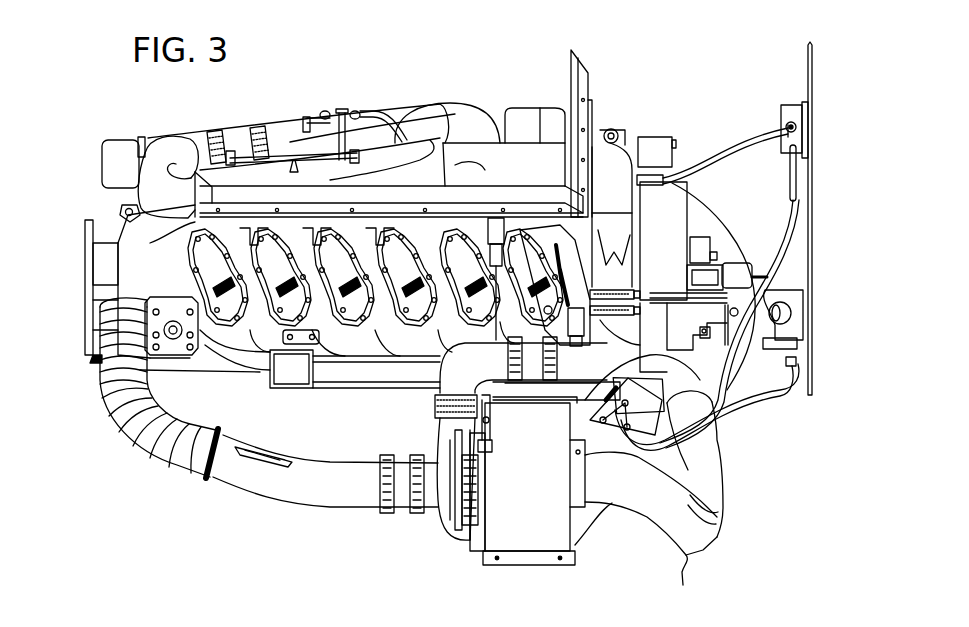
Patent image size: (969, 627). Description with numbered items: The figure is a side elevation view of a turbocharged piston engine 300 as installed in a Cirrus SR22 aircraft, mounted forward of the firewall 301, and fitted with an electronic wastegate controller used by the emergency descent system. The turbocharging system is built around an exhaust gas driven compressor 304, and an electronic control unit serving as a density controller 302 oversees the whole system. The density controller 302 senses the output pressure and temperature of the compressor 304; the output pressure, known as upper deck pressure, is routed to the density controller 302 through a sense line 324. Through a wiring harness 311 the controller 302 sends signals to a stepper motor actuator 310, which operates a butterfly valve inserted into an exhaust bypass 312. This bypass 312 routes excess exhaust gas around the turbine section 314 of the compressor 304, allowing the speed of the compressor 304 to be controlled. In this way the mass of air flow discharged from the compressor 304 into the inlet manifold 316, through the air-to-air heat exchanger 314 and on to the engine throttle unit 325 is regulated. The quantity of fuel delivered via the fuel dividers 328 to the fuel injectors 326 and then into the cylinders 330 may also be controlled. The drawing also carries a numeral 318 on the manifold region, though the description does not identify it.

The engine 300 is at (657, 50).
The firewall 301 is at (808, 62).
The density controller 302 is at (782, 105).
The exhaust gas driven compressor 304 is at (442, 525).
The stepper motor actuator 310 is at (657, 393).
The wiring harness 311 is at (787, 200).
The exhaust bypass 312 is at (720, 477).
The turbine section 314 is at (570, 528).
The inlet manifold 316 is at (445, 378).
The intake manifold 318 is at (480, 160).
The sense line 324 is at (735, 138).
The engine throttle unit 325 is at (288, 130).
The fuel injectors 326 is at (232, 157).
The fuel dividers 328 is at (352, 113).
The cylinders 330 is at (315, 230).